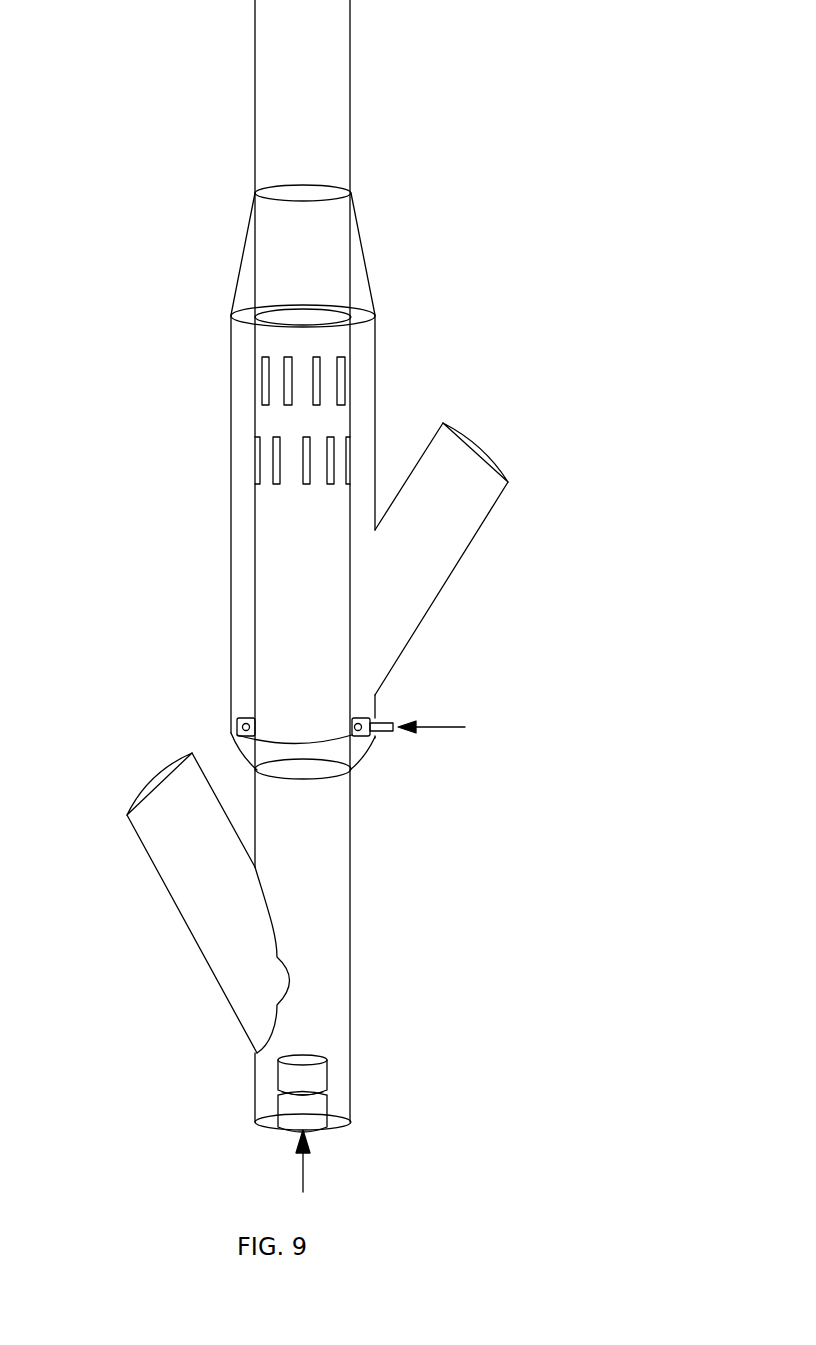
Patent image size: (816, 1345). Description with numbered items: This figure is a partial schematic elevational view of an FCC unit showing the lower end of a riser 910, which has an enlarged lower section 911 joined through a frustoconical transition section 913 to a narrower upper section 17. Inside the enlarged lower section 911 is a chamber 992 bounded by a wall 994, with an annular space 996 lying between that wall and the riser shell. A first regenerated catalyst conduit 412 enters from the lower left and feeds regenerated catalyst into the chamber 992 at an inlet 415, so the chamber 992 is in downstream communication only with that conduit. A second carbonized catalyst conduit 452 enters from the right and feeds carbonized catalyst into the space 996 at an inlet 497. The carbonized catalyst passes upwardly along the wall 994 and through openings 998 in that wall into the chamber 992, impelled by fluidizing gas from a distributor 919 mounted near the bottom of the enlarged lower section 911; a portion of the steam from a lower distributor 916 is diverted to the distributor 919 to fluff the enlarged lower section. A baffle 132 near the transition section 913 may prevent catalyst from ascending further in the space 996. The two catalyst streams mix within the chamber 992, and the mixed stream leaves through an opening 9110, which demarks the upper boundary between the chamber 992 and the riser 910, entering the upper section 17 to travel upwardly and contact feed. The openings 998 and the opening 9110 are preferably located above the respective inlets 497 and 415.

The upper section 17 is at (255, 94).
The riser 910 is at (392, 133).
The opening 9110 is at (311, 190).
The frustoconical transition section 913 is at (242, 255).
The baffle 132 is at (240, 316).
The enlarged lower section 911 is at (230, 646).
The chamber 992 is at (283, 578).
The openings 998 is at (288, 379).
The space 996 is at (360, 410).
The wall 994 is at (352, 497).
The second carbonized catalyst conduit 452 is at (451, 573).
The inlet 497 is at (383, 583).
The distributor 919 is at (360, 737).
The first regenerated catalyst conduit 412 is at (180, 917).
The inlet 415 is at (276, 1012).
The distributor 916 is at (328, 1070).